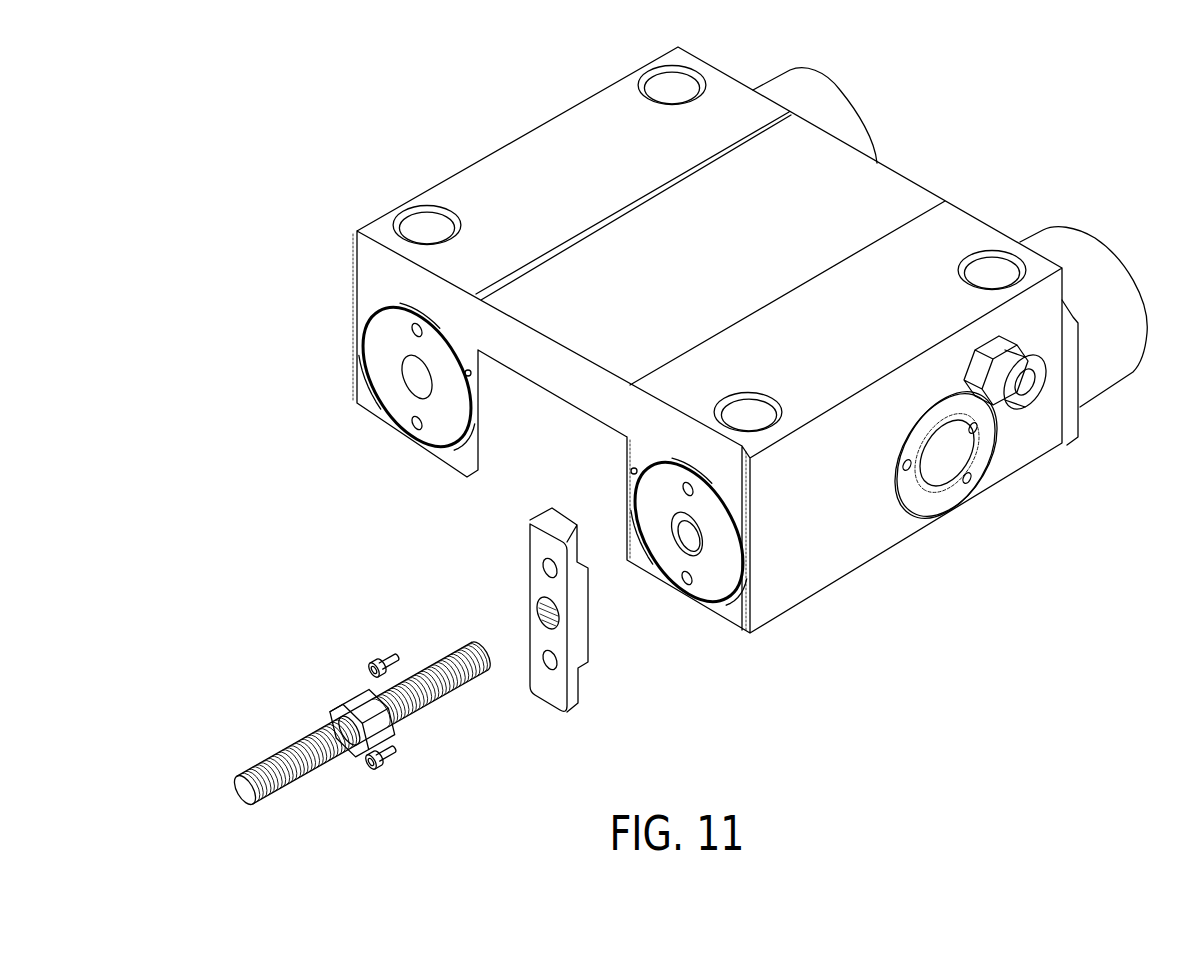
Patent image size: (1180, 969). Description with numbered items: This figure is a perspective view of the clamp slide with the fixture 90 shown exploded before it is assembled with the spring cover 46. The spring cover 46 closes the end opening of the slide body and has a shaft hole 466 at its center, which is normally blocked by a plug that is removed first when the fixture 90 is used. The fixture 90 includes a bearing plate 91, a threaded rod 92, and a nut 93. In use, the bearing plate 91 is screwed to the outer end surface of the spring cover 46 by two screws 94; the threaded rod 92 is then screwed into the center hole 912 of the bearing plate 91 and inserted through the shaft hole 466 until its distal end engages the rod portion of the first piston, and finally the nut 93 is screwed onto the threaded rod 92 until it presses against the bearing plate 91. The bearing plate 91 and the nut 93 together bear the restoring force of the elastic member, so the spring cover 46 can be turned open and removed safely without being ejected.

The spring cover 46 is at (725, 545).
The shaft hole 466 is at (684, 548).
The fixture 90 is at (208, 780).
The bearing plate 91 is at (509, 649).
The center hole 912 is at (537, 607).
The threaded rod 92 is at (297, 742).
The nut 93 is at (363, 703).
The screws 94 is at (385, 657).